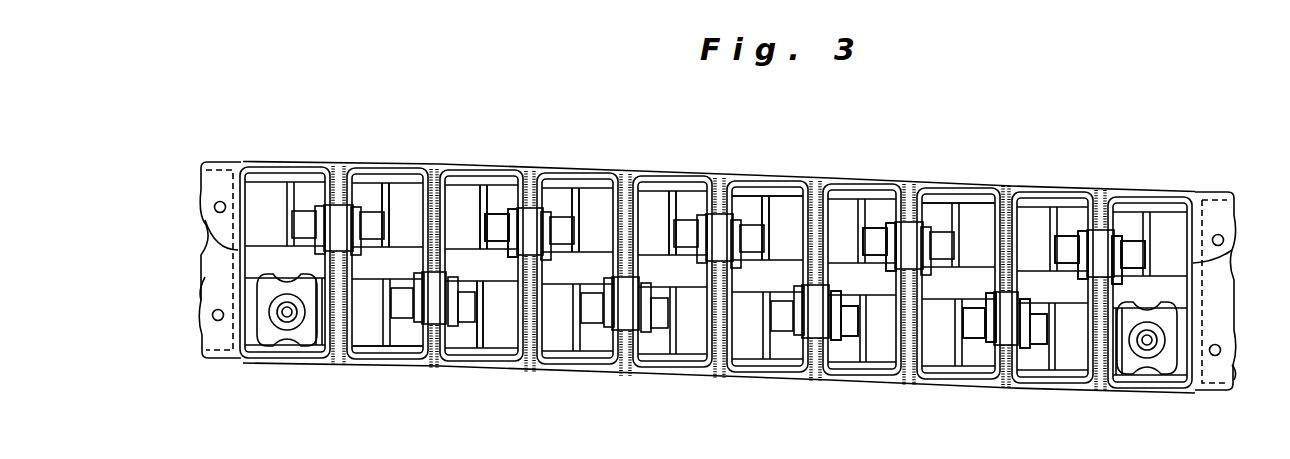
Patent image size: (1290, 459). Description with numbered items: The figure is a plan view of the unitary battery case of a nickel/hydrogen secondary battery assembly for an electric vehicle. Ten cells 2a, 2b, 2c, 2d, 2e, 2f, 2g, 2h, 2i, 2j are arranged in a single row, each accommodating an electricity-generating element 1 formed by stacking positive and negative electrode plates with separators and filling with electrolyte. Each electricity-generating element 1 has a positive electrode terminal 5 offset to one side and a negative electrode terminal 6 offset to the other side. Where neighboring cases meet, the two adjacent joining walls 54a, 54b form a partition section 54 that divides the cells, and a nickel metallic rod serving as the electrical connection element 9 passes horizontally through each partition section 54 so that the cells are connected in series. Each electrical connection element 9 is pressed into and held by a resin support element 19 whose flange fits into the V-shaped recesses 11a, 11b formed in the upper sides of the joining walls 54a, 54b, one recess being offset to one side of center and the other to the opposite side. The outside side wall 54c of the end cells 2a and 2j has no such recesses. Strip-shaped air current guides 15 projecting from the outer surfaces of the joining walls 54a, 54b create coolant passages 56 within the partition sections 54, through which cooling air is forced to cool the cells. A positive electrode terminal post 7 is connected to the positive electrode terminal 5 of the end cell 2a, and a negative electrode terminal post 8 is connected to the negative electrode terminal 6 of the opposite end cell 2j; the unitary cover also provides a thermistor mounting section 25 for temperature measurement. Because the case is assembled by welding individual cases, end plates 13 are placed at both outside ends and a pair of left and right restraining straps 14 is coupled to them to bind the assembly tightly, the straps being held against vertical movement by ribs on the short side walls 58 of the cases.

The electricity-generating element 1 is at (990, 174).
The cell 2a is at (304, 158).
The cell 2b is at (400, 158).
The cell 2c is at (490, 160).
The cell 2d is at (586, 161).
The cell 2e is at (704, 169).
The cell 2f is at (767, 276).
The cell 2g is at (868, 171).
The cell 2h is at (968, 172).
The cell 2i is at (1040, 185).
The cell 2j is at (1150, 263).
The positive electrode terminal 5 is at (1155, 238).
The negative electrode terminal 6 is at (1071, 195).
The positive electrode terminal post 7 is at (297, 318).
The negative electrode terminal post 8 is at (1147, 342).
The electrical connection element 9 is at (497, 227).
The recess 11a is at (598, 220).
The recess 11b is at (661, 223).
The end plate 13 is at (203, 280).
The restraining strap 14 is at (337, 165).
The air current guide 15 is at (434, 216).
The support element 19 is at (542, 187).
The thermistor mounting section 25 is at (797, 168).
The partition section 54 is at (701, 121).
The joining wall 54a is at (603, 174).
The joining wall 54b is at (655, 174).
The side wall 54c is at (232, 252).
The coolant passage 56 is at (838, 176).
The side wall 58 is at (762, 176).